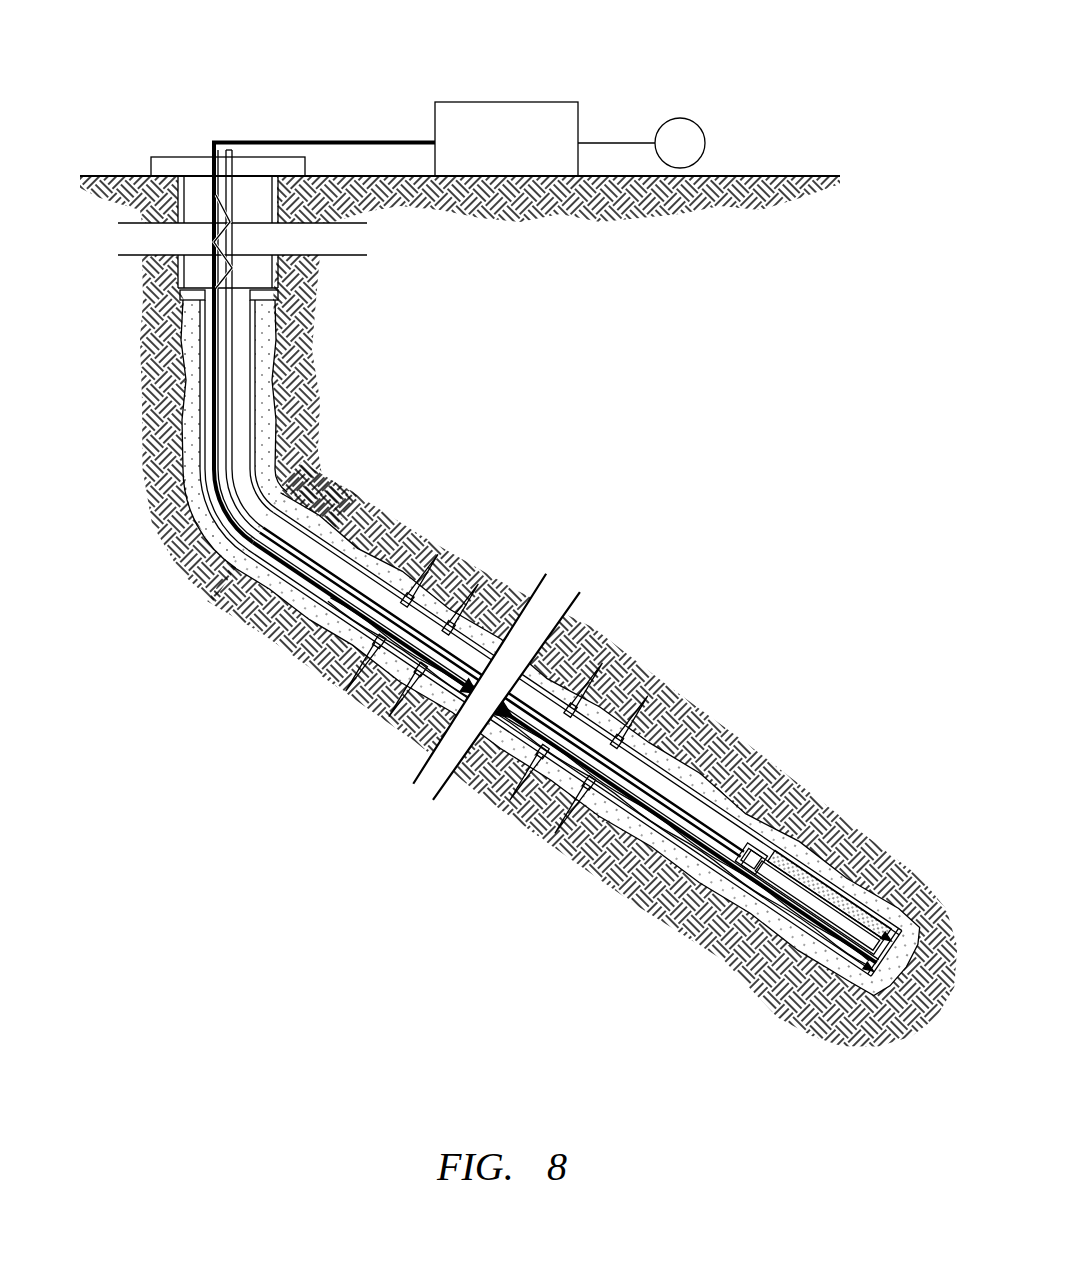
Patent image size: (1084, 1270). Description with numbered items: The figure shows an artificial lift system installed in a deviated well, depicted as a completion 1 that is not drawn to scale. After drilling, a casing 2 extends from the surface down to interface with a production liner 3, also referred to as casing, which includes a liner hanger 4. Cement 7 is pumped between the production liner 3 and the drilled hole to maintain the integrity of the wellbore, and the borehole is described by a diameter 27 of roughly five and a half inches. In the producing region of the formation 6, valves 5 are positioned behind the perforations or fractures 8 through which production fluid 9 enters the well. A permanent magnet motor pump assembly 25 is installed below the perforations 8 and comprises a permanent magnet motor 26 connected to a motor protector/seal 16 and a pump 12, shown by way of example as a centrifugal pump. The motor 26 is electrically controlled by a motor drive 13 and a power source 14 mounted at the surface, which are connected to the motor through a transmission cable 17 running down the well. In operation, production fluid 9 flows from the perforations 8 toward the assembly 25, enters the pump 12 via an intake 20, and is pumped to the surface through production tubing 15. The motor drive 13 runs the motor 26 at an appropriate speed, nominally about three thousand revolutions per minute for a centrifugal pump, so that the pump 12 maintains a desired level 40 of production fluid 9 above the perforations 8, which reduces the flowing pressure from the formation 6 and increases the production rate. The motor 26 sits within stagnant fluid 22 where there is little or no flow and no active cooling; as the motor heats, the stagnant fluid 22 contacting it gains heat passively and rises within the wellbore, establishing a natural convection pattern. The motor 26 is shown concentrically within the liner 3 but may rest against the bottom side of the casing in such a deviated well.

The completion 1 is at (125, 205).
The casing 2 is at (283, 300).
The production liner 3 is at (262, 432).
The liner hanger 4 is at (192, 306).
The valves 5 is at (420, 562).
The formation 6 is at (583, 668).
The cement 7 is at (232, 560).
The perforations 8 is at (334, 672).
The production fluid 9 is at (715, 830).
The pump 12 is at (737, 868).
The motor drive 13 is at (530, 102).
The power source 14 is at (680, 118).
The production tubing 15 is at (654, 764).
The motor protector/seal 16 is at (772, 930).
The transmission cable 17 is at (356, 140).
The intake 20 is at (770, 862).
The stagnant fluid 22 is at (844, 908).
The permanent magnet motor pump assembly 25 is at (798, 882).
The permanent magnet motor 26 is at (862, 982).
The diameter 27 is at (896, 980).
The level 40 is at (362, 600).